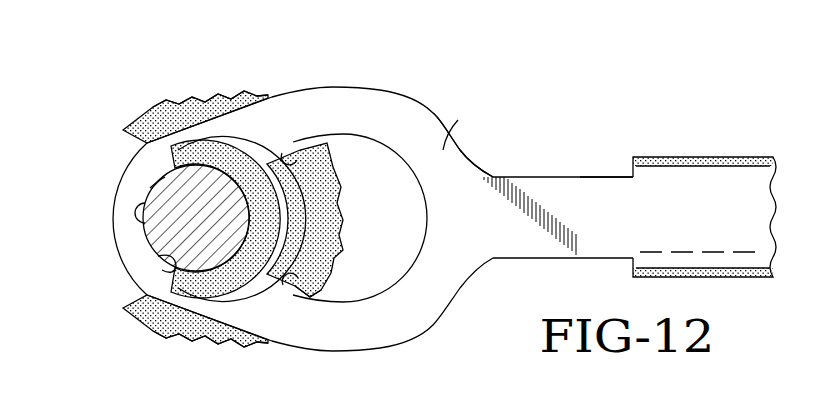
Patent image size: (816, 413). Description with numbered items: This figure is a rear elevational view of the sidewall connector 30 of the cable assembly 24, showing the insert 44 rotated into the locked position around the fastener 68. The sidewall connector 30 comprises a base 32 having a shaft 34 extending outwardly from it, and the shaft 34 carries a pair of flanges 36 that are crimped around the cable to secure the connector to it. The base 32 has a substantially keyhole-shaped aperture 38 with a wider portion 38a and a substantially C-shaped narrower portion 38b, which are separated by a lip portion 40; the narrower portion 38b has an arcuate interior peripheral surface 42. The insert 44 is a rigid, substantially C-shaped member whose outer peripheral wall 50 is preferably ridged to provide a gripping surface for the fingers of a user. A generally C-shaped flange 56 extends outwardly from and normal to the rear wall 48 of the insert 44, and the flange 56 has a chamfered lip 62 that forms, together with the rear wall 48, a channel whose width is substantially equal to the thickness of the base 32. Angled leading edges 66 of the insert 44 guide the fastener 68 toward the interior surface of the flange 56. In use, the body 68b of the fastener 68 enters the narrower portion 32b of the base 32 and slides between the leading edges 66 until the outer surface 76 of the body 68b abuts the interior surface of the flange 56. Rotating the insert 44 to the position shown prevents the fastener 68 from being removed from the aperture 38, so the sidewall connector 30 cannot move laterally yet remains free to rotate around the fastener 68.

The cable assembly 24 is at (639, 184).
The sidewall connector 30 is at (562, 168).
The base 32 is at (440, 114).
The narrower portion 32b is at (455, 135).
The shaft 34 is at (601, 194).
The flanges 36 is at (698, 157).
The aperture 38 is at (393, 148).
The wider portion 38a is at (358, 146).
The narrower portion 38b is at (162, 262).
The lip portion 40 is at (285, 152).
The arcuate interior peripheral surface 42 is at (147, 218).
The insert 44 is at (166, 187).
The rear wall 48 is at (325, 190).
The outer peripheral wall 50 is at (175, 100).
The flange 56 is at (300, 218).
The chamfered lip 62 is at (206, 140).
The leading edges 66 is at (138, 130).
The fastener 68 is at (138, 243).
The body 68b is at (152, 187).
The outer surface 76 is at (282, 258).